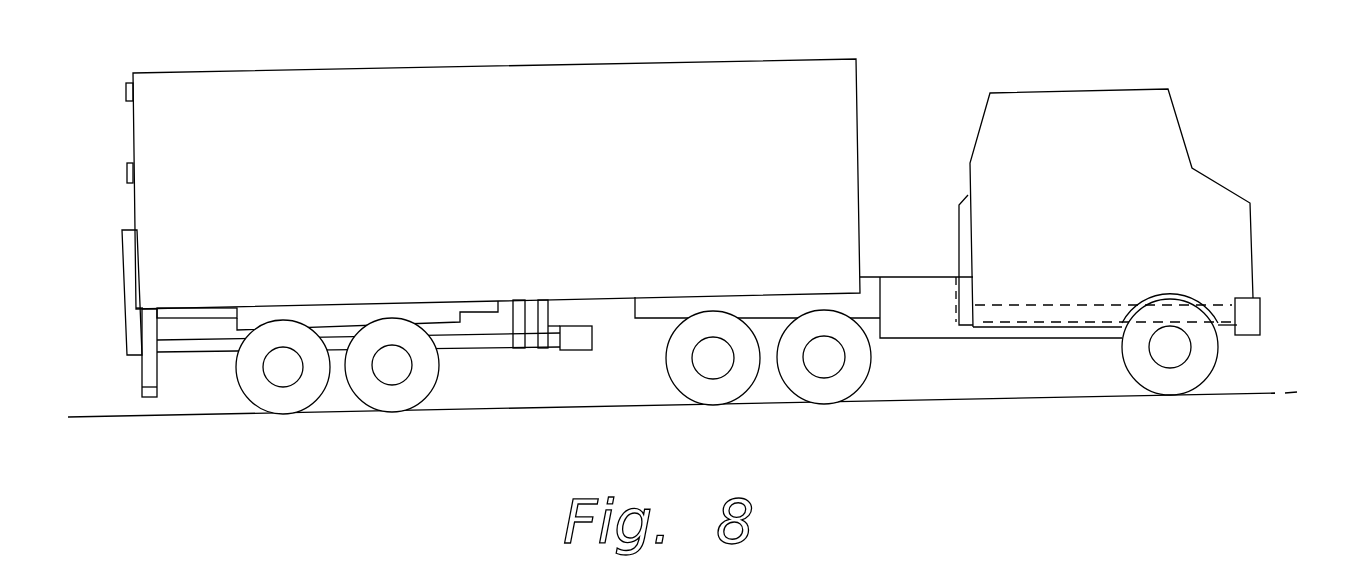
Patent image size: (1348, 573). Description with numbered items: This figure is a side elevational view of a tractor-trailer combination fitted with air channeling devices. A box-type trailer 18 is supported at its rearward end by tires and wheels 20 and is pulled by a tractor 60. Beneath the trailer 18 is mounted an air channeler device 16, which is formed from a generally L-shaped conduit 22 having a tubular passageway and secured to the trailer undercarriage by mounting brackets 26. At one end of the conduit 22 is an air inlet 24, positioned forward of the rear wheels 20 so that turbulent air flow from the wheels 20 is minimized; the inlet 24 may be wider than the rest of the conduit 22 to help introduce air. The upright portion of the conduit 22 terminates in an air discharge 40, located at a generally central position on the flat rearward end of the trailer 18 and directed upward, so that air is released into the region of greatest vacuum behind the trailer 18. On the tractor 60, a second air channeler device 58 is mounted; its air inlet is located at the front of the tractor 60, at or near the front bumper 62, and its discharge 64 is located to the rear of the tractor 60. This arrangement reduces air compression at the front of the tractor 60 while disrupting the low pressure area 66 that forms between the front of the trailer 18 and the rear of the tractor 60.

The air channeler device 16 is at (212, 367).
The trailer 18 is at (533, 62).
The tires and wheels 20 is at (430, 380).
The conduit 22 is at (118, 322).
The air inlet 24 is at (593, 345).
The mounting brackets 26 is at (550, 313).
The air discharge 40 is at (133, 229).
The second air channeler device 58 is at (1020, 317).
The tractor 60 is at (1133, 85).
The front bumper 62 is at (1260, 312).
The discharge 64 is at (968, 196).
The area 66 is at (918, 240).